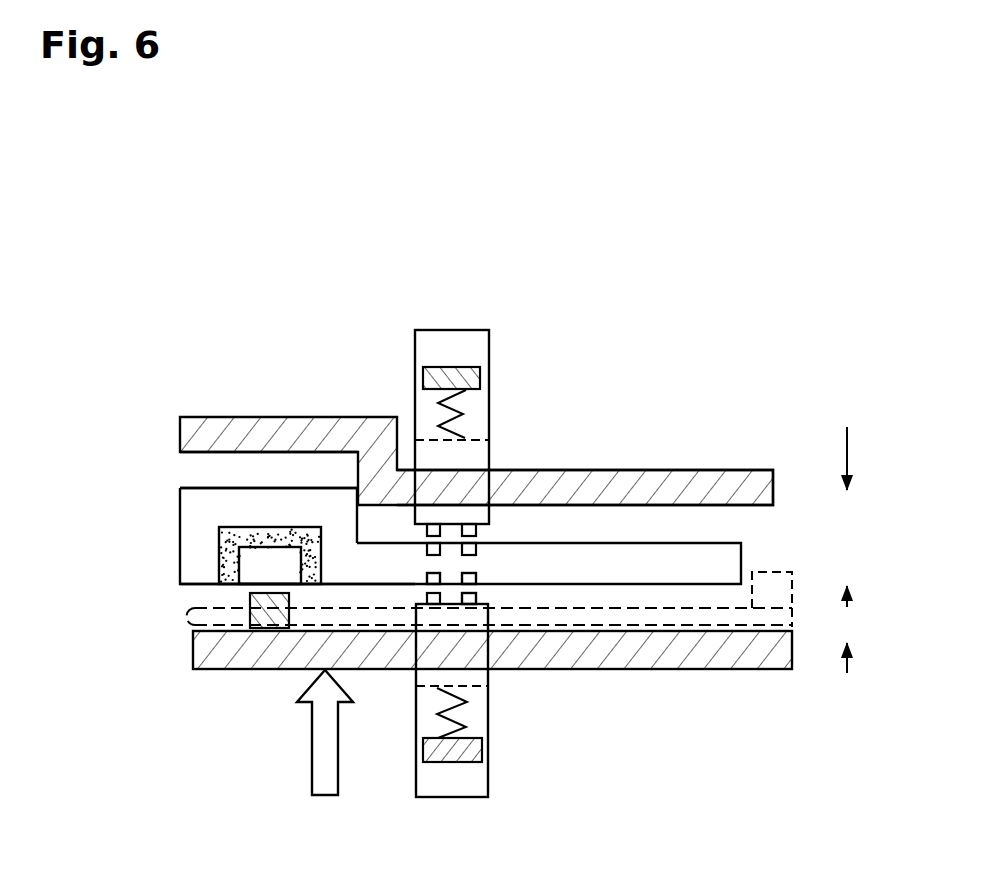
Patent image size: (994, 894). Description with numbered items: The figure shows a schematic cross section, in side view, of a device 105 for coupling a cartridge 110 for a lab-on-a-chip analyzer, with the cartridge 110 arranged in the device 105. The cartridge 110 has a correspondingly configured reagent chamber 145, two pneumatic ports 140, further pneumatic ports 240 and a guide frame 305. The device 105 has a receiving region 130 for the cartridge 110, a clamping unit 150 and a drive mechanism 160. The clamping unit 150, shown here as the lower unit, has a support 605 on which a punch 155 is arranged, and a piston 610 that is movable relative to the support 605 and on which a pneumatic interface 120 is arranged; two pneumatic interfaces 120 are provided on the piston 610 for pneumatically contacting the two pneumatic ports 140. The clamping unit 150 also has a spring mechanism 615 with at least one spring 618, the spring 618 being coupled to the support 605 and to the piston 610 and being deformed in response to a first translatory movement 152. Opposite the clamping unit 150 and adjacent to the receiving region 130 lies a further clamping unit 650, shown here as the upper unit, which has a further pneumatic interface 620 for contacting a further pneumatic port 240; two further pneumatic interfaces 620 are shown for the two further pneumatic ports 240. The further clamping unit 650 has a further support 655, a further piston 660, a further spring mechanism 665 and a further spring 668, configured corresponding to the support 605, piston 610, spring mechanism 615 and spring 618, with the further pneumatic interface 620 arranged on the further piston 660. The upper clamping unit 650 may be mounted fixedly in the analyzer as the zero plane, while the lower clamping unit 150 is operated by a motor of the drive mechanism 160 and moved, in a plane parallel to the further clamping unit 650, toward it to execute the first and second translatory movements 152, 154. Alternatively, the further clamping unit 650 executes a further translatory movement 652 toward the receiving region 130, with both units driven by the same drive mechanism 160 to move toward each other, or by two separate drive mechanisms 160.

The device 105 is at (175, 300).
The cartridge 110 is at (176, 518).
The pneumatic interface 120 is at (496, 584).
The receiving region 130 is at (198, 471).
The pneumatic port 140 is at (415, 583).
The reagent chamber 145 is at (220, 560).
The clamping unit 150 is at (156, 624).
The first translatory movement 152 is at (876, 651).
The second translatory movement 154 is at (876, 583).
The punch 155 is at (250, 597).
The drive mechanism 160 is at (310, 777).
The further pneumatic port 240 is at (441, 553).
The guide frame 305 is at (793, 572).
The support 605 is at (213, 669).
The piston 610 is at (452, 797).
The spring mechanism 615 is at (492, 752).
The spring 618 is at (443, 713).
The further pneumatic interface 620 is at (432, 523).
The further clamping unit 650 is at (242, 410).
The further translatory movement 652 is at (876, 458).
The further support 655 is at (713, 468).
The further piston 660 is at (450, 330).
The further spring mechanism 665 is at (492, 381).
The further spring 668 is at (465, 412).